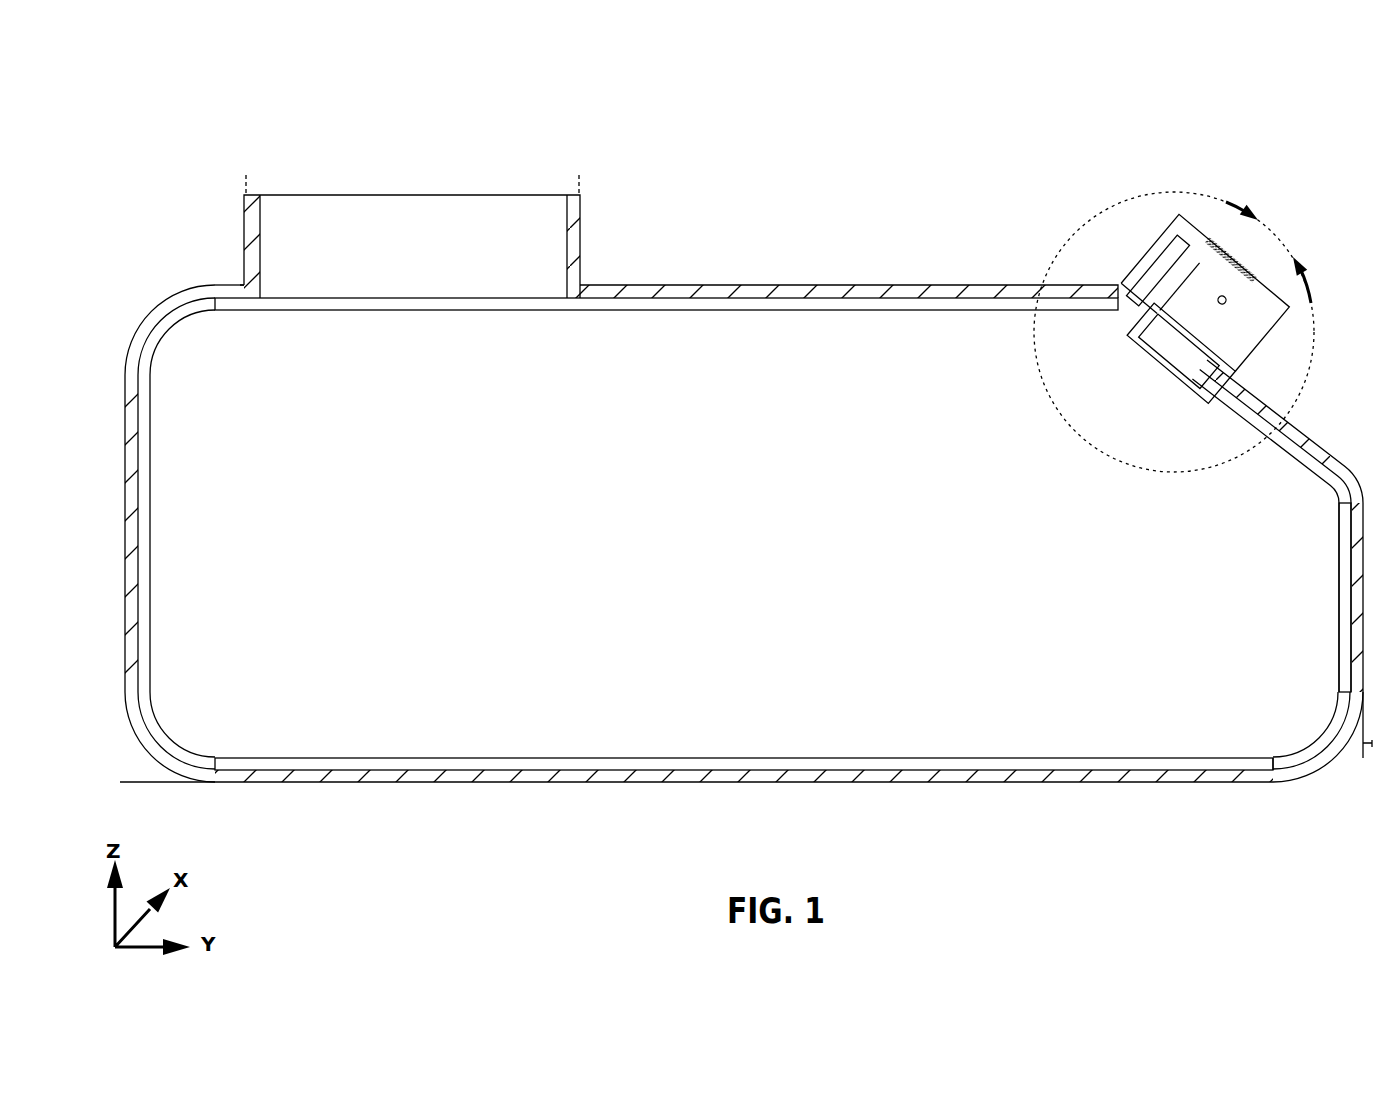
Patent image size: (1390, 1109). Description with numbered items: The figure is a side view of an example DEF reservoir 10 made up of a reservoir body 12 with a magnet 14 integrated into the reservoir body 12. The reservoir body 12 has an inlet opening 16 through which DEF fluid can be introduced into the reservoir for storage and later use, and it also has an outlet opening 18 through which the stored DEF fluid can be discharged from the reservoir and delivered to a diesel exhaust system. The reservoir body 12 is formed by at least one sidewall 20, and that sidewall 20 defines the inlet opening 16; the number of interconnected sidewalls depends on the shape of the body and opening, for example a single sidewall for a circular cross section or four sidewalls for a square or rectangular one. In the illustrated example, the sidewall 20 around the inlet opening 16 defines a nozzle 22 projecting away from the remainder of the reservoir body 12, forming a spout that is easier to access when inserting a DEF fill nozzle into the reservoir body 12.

The DEF reservoir 10 is at (118, 116).
The reservoir body 12 is at (874, 290).
The magnet 14 is at (1140, 317).
The inlet opening 16 is at (1311, 203).
The outlet opening 18 is at (500, 127).
The sidewall 20 is at (1225, 305).
The nozzle 22 is at (1168, 205).